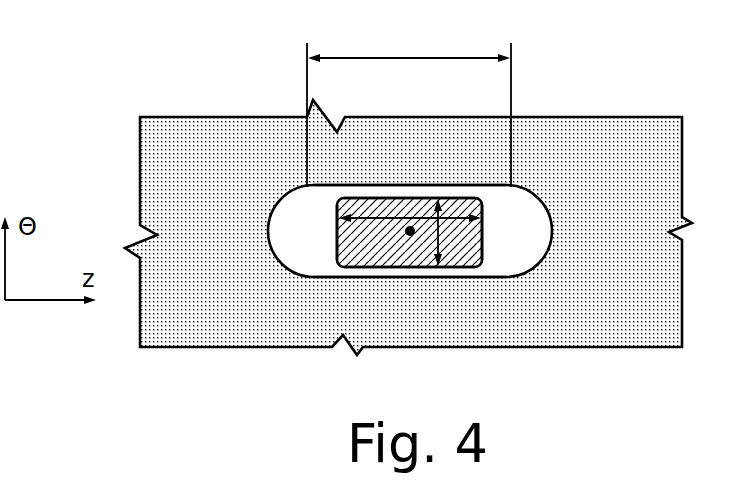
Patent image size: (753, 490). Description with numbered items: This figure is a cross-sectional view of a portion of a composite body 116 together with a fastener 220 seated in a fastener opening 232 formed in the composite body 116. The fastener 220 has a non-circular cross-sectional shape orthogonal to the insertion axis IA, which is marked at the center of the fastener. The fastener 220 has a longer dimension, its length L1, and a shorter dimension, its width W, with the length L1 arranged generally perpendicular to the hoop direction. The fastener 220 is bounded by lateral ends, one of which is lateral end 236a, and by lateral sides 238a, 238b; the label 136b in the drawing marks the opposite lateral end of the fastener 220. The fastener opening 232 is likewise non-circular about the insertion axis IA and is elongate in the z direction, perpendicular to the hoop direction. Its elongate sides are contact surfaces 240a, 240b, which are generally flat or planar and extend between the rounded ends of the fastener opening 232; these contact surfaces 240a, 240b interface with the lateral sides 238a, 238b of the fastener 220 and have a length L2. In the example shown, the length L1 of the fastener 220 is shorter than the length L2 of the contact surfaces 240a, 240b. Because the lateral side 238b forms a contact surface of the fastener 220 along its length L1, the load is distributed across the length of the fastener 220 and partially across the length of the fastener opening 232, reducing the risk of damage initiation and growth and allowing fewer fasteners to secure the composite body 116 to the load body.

The composite body 116 is at (178, 171).
The fastener opening 232 is at (552, 272).
The fastener 220 is at (327, 265).
The lateral end 236a is at (338, 229).
The second side wall 136b is at (482, 233).
The contact surface 240a is at (372, 185).
The contact surface 240b is at (386, 277).
The lateral side 238a is at (462, 198).
The lateral side 238b is at (367, 248).
The length of contact surfaces L2 is at (418, 57).
The length of fastener L1 is at (393, 218).
The width of fastener W is at (440, 228).
The insertion axis IA is at (412, 234).